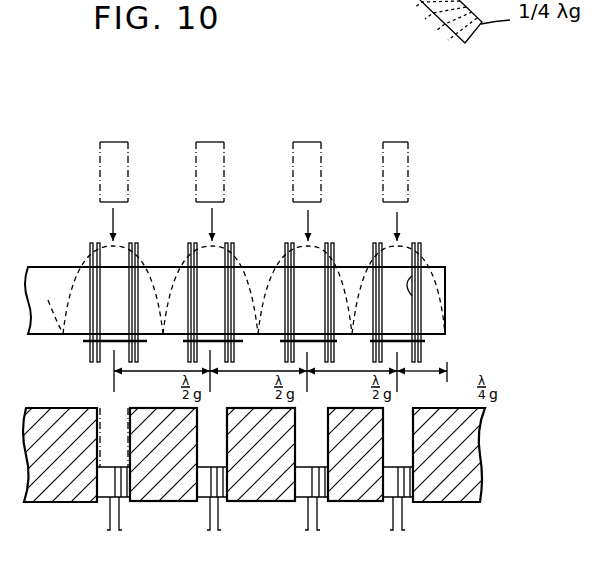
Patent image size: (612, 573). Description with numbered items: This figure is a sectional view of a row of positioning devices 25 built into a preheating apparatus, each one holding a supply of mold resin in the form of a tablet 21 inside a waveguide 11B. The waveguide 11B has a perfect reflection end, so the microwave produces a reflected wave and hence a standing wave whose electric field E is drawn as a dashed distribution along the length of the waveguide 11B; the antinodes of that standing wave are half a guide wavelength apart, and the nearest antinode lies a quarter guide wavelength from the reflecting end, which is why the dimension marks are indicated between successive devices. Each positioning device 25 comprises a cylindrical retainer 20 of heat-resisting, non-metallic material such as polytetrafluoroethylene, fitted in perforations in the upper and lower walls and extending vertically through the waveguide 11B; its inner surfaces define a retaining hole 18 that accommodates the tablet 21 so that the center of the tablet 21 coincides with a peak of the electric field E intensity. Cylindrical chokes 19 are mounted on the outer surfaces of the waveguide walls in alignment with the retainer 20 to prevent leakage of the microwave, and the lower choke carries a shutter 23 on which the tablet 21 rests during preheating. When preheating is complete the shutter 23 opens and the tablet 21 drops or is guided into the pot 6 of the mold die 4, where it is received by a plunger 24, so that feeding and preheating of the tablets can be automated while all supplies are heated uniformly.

The mold die 4 is at (470, 440).
The pot 6 is at (104, 410).
The waveguide 11B is at (445, 267).
The retaining hole 18 is at (412, 276).
The cylindrical choke 19 is at (415, 262).
The cylindrical retainer 20 is at (384, 253).
The tablet 21 is at (114, 141).
The shutter 23 is at (175, 383).
The plunger 24 is at (127, 484).
The positioning device 25 is at (133, 231).
The electric field E is at (78, 292).